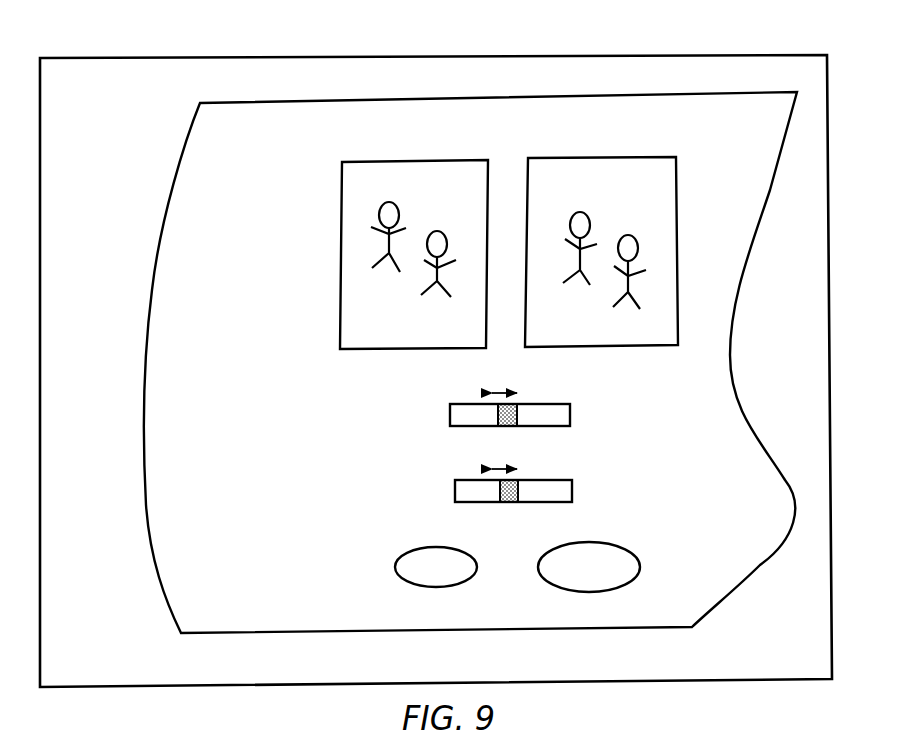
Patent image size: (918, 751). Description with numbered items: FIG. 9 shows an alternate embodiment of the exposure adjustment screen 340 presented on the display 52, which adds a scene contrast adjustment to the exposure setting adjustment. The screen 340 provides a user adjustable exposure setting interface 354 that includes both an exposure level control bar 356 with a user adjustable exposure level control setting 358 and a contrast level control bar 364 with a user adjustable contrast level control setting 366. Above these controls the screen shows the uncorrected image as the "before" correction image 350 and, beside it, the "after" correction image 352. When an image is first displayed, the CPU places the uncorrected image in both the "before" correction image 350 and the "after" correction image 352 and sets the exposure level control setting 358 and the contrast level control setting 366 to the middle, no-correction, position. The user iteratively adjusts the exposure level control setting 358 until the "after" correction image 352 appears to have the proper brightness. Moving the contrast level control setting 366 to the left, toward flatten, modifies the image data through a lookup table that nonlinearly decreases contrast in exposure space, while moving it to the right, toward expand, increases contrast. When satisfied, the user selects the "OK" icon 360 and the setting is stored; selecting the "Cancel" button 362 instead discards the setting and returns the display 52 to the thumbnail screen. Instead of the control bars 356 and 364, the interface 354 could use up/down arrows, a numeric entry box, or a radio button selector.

The display 52 is at (731, 44).
The exposure adjustment screen 340 is at (665, 93).
The "before" correction image 350 is at (473, 161).
The "after" correction image 352 is at (672, 158).
The user adjustable exposure setting interface 354 is at (303, 399).
The exposure level control bar 356 is at (553, 404).
The exposure level control setting 358 is at (506, 427).
The "OK" icon 360 is at (396, 565).
The "Cancel" button 362 is at (641, 562).
The contrast level control bar 364 is at (556, 480).
The contrast level control setting 366 is at (508, 503).